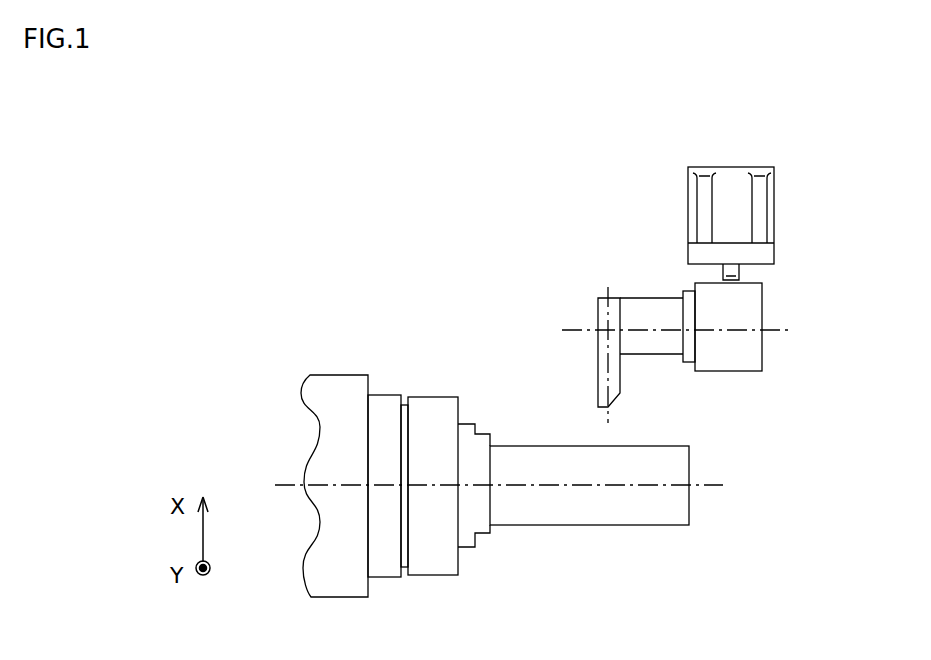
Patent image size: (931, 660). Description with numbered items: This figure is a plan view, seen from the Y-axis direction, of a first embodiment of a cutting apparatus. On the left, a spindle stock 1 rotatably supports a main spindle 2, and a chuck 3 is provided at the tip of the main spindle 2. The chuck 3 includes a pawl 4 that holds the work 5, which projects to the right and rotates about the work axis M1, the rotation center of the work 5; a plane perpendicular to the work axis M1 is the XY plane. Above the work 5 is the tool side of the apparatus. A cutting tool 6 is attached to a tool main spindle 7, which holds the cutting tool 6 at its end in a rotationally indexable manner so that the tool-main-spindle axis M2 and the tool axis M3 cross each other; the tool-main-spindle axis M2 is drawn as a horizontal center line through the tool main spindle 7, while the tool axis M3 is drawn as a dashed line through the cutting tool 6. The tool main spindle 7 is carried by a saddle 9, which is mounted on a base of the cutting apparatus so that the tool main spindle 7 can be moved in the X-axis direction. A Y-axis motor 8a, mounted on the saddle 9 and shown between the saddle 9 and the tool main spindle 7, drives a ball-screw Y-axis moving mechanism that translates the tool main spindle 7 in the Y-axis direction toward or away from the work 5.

The spindle stock 1 is at (338, 375).
The main spindle 2 is at (387, 395).
The chuck 3 is at (432, 397).
The pawl 4 is at (462, 425).
The work 5 is at (575, 525).
The cutting tool 6 is at (598, 373).
The tool main spindle 7 is at (732, 355).
The Y-axis motor 8a is at (741, 271).
The saddle 9 is at (774, 213).
The work axis M1 is at (708, 488).
The tool-main-spindle axis M2 is at (778, 333).
The tool axis M3 is at (609, 288).